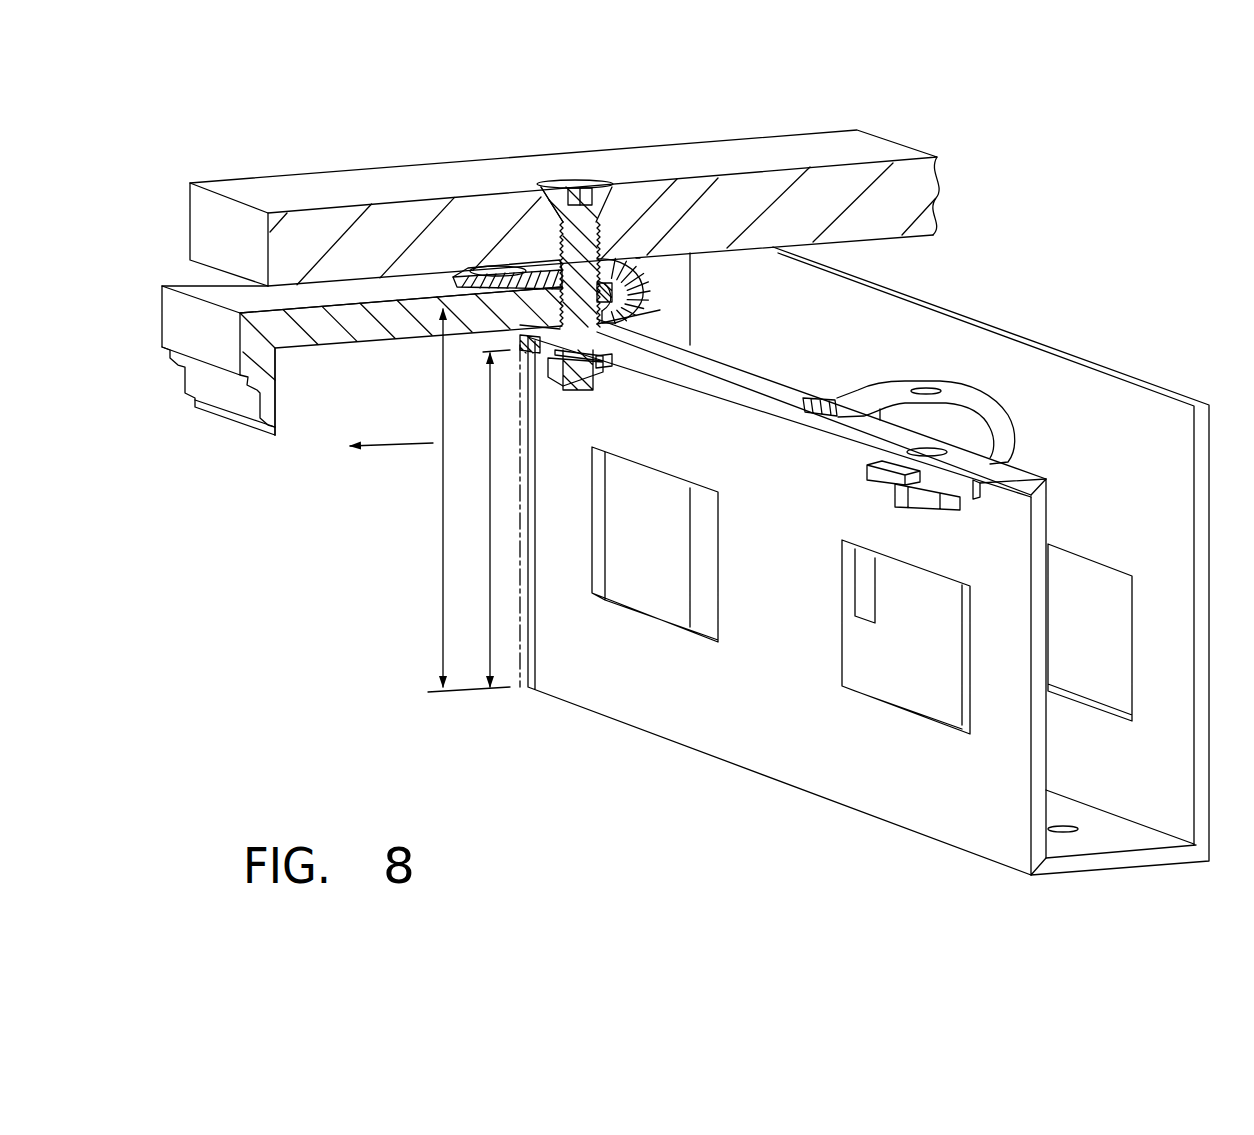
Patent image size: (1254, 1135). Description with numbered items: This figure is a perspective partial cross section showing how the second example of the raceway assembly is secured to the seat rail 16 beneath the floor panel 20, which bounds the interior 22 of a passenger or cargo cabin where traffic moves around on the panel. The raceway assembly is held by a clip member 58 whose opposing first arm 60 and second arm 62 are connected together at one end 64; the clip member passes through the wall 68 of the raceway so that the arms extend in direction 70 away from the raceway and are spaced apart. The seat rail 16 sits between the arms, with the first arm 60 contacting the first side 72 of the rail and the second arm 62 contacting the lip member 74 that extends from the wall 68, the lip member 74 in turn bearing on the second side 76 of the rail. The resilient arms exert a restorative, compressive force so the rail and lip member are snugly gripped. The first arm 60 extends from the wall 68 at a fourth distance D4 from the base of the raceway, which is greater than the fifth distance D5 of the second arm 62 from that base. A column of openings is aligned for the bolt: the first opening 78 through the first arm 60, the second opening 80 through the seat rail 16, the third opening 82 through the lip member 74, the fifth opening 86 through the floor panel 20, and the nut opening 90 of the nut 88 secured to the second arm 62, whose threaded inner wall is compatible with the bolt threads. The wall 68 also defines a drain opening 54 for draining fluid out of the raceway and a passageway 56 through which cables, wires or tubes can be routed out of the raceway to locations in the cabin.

The seat rail 16 is at (350, 293).
The floor panel 20 is at (843, 140).
The interior 22 is at (607, 112).
The drain opening 54 is at (1065, 833).
The passageway 56 is at (650, 607).
The clip member 58 is at (663, 260).
The first arm 60 is at (500, 263).
The second arm 62 is at (520, 337).
The one end of the clip member 64 is at (658, 285).
The wall 68 is at (652, 688).
The direction 70 is at (403, 447).
The first side 72 is at (417, 297).
The lip member 74 is at (620, 363).
The second side 76 is at (408, 340).
The first opening 78 is at (638, 250).
The second opening 80 is at (690, 345).
The third opening 82 is at (1043, 475).
The fifth opening 86 is at (613, 222).
The nut 88 is at (553, 378).
The nut opening 90 is at (590, 367).
The fourth distance D4 is at (443, 603).
The fifth distance D5 is at (490, 597).